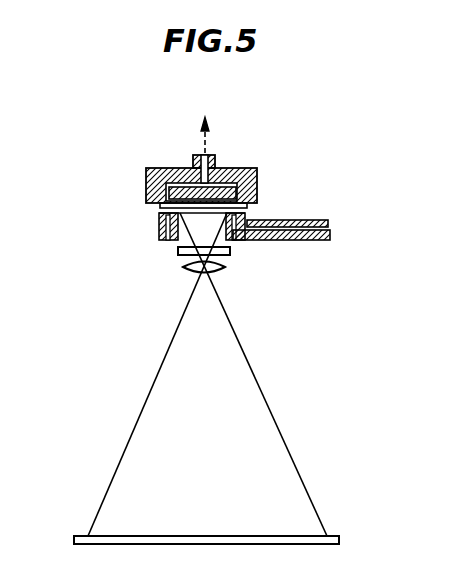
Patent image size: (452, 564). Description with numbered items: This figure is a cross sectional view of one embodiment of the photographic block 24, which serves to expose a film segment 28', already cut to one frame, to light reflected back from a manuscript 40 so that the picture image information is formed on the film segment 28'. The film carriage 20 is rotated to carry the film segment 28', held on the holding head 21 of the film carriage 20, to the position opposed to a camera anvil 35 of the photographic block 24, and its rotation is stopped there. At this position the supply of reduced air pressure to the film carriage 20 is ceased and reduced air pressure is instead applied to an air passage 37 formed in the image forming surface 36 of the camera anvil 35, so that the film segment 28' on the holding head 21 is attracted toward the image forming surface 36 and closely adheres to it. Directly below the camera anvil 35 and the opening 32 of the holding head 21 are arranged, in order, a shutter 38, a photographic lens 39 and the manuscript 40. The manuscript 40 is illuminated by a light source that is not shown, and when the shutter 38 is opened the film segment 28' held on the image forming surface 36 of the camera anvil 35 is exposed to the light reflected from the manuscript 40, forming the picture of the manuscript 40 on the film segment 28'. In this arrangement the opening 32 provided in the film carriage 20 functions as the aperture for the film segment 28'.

The film carriage 20 is at (296, 247).
The holding head 21 is at (160, 238).
The photographic block 24 is at (174, 160).
The film segment 28' is at (175, 233).
The opening 32 is at (172, 240).
The camera anvil 35 is at (242, 168).
The image forming surface 36 is at (262, 210).
The air passage 37 is at (257, 183).
The shutter 38 is at (229, 251).
The photographic lens 39 is at (221, 269).
The manuscript 40 is at (302, 538).